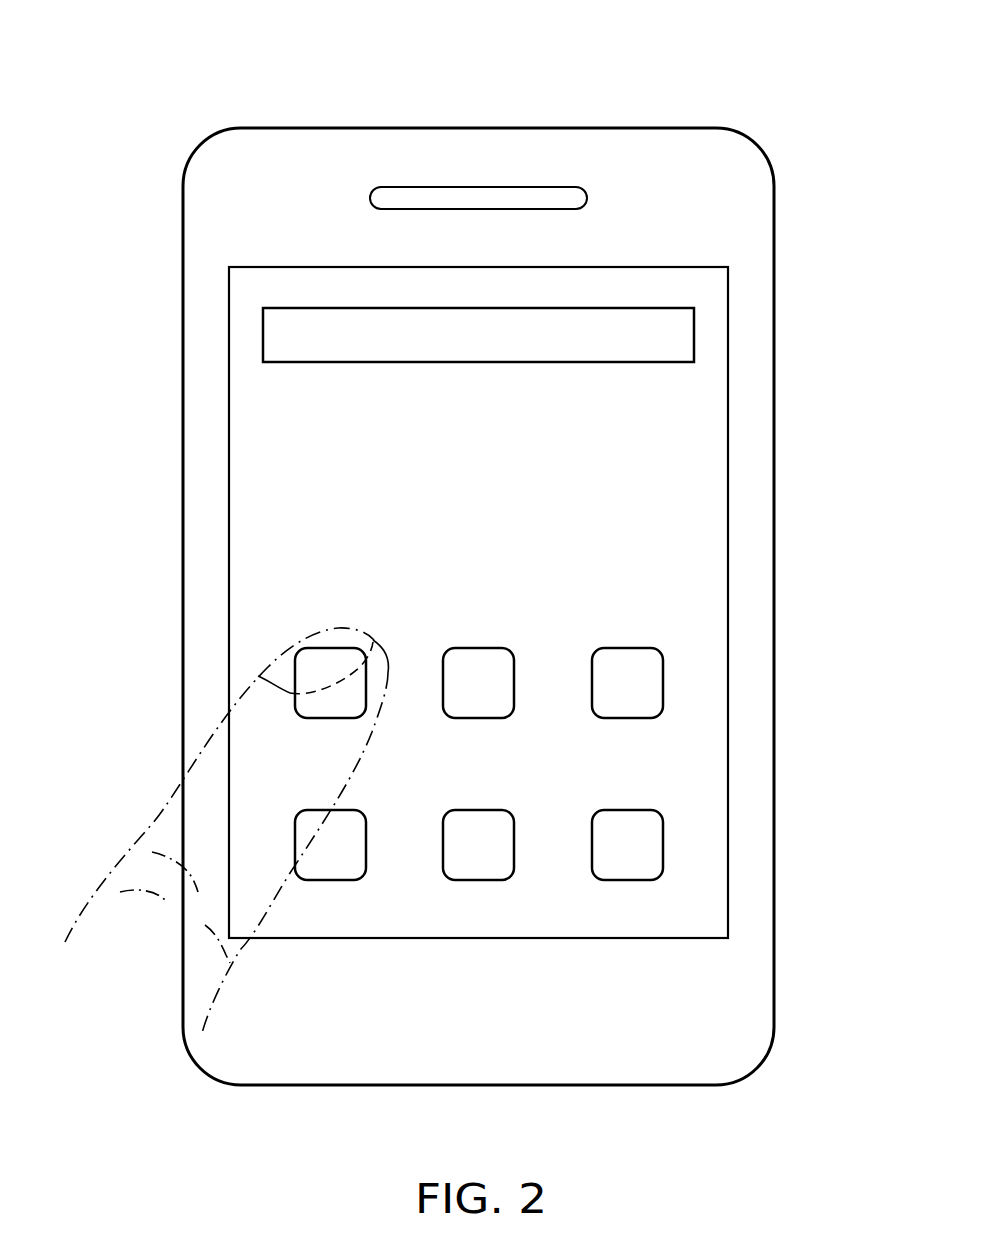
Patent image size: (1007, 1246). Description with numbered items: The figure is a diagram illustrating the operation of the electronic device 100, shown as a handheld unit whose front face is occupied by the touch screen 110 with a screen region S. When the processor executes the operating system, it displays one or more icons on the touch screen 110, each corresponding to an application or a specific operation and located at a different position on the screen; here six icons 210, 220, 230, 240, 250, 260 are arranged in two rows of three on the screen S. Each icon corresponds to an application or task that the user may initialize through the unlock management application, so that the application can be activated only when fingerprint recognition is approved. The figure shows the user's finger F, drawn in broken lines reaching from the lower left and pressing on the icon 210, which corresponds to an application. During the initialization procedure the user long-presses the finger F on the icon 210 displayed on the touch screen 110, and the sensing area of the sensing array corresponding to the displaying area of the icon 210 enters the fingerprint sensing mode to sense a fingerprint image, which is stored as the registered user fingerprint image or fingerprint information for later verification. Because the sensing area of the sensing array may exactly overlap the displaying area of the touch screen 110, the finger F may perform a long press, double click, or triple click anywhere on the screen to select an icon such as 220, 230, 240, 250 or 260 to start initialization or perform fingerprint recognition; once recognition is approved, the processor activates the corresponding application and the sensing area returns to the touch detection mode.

The electronic device 100 is at (750, 97).
The touch screen 110 is at (728, 420).
The screen S is at (697, 472).
The icon 210 is at (367, 683).
The icon 220 is at (477, 648).
The icon 230 is at (626, 648).
The icon 240 is at (330, 880).
The icon 250 is at (477, 810).
The icon 260 is at (626, 810).
The finger F is at (160, 820).